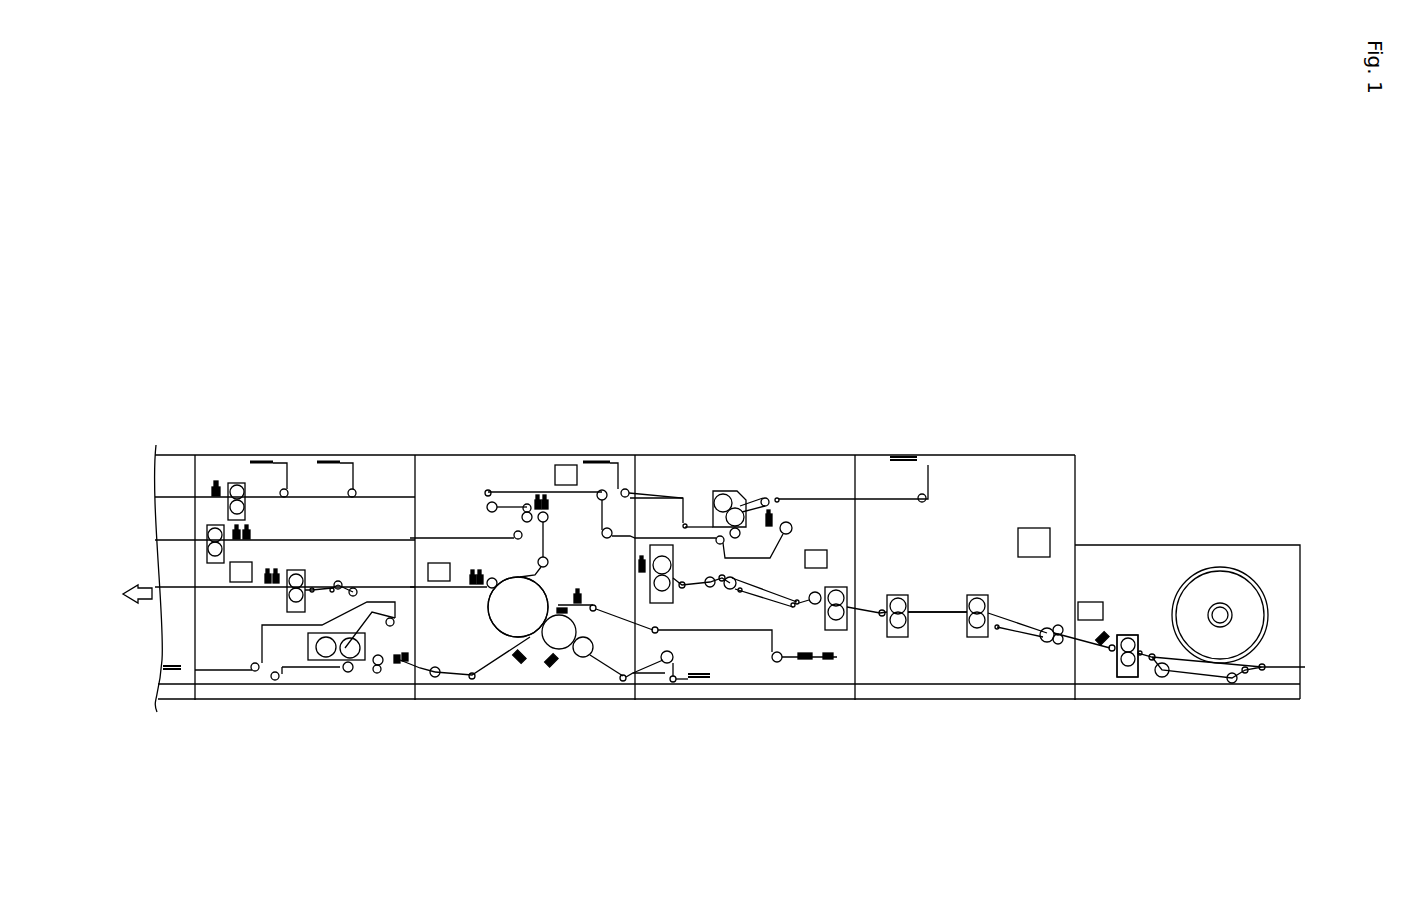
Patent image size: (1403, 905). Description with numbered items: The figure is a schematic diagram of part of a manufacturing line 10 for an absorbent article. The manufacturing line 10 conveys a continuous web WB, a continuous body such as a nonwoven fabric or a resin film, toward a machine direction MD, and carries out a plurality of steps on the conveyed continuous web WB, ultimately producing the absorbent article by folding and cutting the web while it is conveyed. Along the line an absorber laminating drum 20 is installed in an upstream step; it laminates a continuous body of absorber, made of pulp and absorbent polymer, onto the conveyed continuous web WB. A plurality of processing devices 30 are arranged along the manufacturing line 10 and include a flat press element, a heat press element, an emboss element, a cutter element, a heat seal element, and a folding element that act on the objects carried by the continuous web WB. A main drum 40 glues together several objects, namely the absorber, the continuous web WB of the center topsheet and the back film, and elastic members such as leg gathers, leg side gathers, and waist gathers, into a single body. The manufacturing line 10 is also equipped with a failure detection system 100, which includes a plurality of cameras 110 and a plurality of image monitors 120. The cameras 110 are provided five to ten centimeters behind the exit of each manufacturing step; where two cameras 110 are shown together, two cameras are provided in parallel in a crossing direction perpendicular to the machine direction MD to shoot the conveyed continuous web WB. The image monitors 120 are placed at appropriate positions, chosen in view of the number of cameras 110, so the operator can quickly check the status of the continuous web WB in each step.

The manufacturing line 10 is at (1243, 413).
The absorber laminating drum 20 is at (1246, 571).
The processing devices 30 is at (1126, 678).
The main drum 40 is at (498, 638).
The failure detection system 100 is at (1036, 527).
The cameras 110 is at (278, 569).
The image monitors 120 is at (238, 562).
The continuous web WB is at (943, 613).
The machine direction MD is at (142, 603).